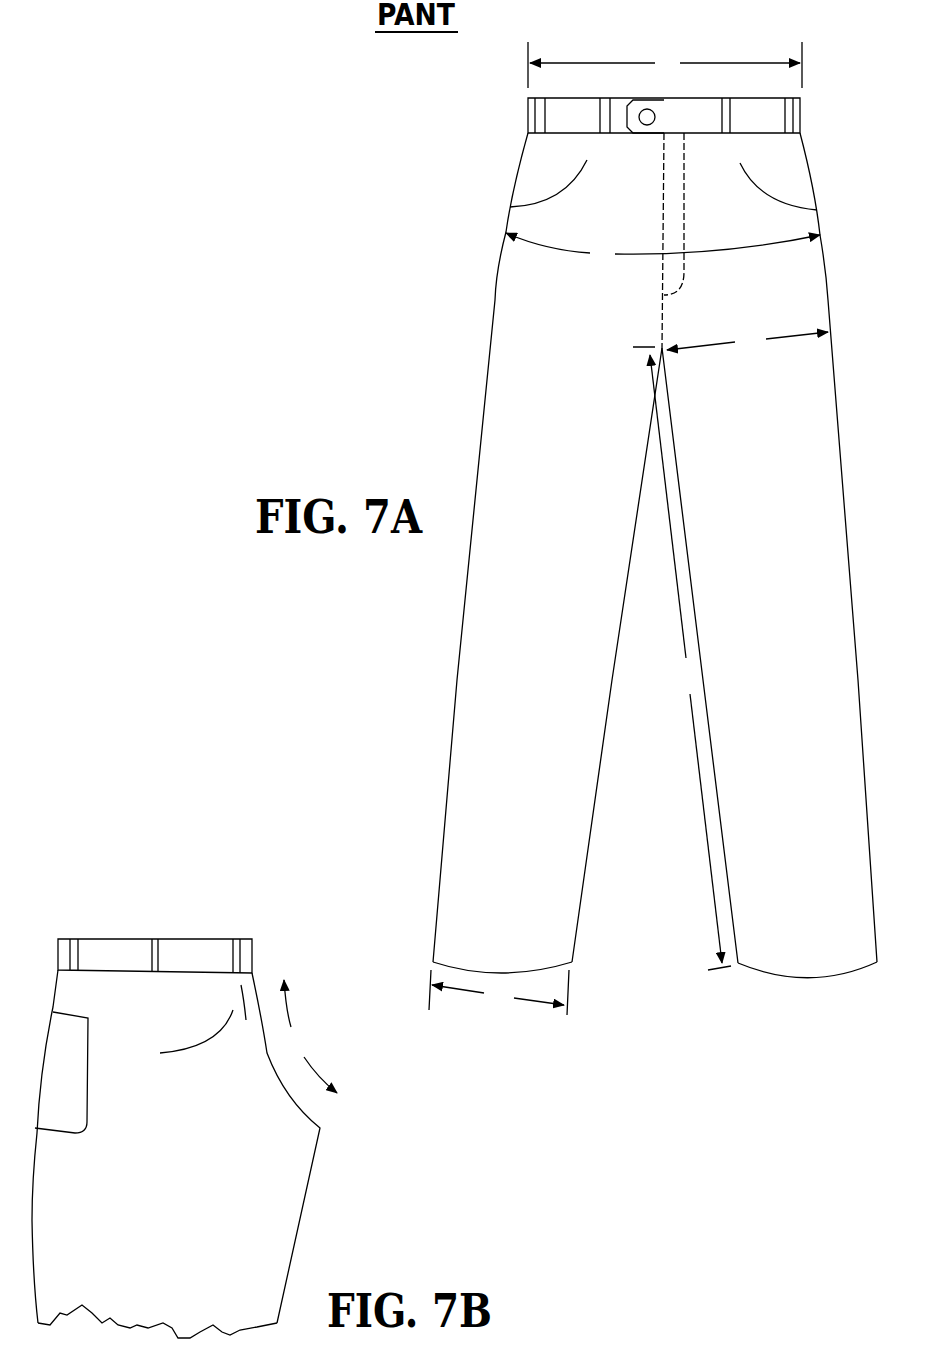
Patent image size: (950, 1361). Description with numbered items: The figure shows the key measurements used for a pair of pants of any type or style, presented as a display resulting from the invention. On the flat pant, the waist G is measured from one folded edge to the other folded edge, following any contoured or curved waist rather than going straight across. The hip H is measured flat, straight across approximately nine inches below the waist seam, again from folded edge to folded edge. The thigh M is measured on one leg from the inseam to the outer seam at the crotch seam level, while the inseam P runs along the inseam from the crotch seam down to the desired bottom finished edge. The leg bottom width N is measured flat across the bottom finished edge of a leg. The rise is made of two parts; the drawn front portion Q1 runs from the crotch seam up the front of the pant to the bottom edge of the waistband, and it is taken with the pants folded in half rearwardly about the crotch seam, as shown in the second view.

In FIG. 7A, the waist measurement G is at (665, 65).
In FIG. 7A, the hip measurement H is at (663, 247).
In FIG. 7A, the thigh measurement M is at (747, 343).
In FIG. 7A, the inseam measurement P is at (682, 658).
In FIG. 7A, the leg bottom width measurement N is at (499, 992).
In FIG. 7B, the front rise measurement Q1 is at (310, 1036).